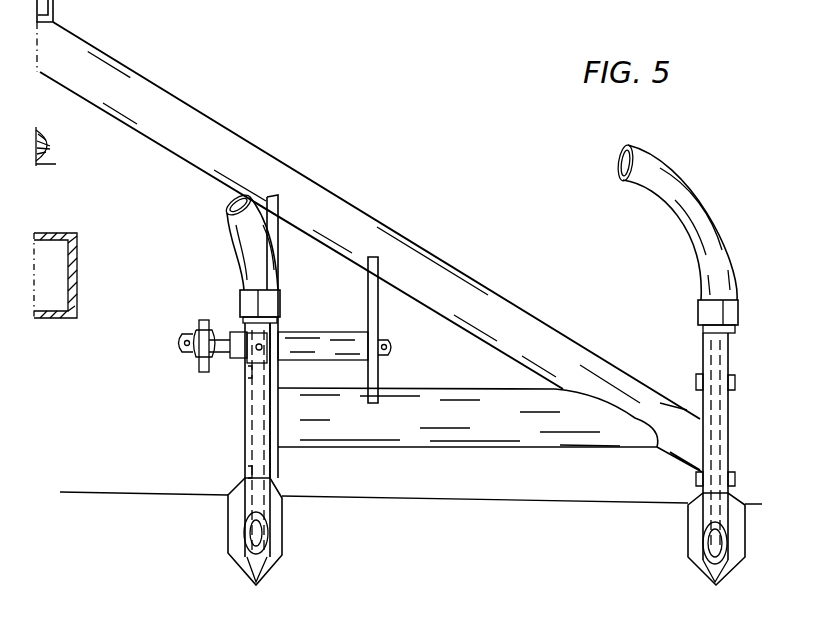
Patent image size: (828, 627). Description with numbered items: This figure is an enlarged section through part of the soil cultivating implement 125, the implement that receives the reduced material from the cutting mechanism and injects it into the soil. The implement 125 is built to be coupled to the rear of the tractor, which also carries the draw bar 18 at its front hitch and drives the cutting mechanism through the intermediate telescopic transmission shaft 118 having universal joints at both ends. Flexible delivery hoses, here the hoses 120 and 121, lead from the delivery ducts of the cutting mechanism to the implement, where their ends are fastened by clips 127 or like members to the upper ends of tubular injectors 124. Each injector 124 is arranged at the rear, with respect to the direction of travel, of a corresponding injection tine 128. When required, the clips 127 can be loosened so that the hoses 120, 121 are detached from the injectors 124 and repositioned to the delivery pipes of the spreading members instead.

The draw bar 18 is at (78, 264).
The intermediate telescopic transmission shaft 118 is at (50, 163).
The hose 120 is at (241, 238).
The hose 121 is at (683, 235).
The injector 124 is at (267, 519).
The soil cultivating implement 125 is at (203, 119).
The clip 127 is at (282, 300).
The injection tine 128 is at (228, 551).